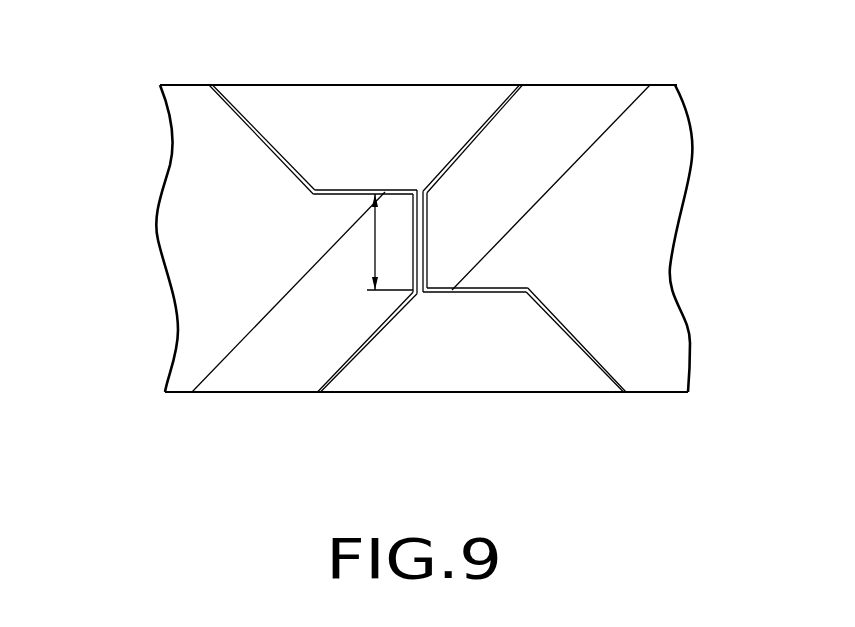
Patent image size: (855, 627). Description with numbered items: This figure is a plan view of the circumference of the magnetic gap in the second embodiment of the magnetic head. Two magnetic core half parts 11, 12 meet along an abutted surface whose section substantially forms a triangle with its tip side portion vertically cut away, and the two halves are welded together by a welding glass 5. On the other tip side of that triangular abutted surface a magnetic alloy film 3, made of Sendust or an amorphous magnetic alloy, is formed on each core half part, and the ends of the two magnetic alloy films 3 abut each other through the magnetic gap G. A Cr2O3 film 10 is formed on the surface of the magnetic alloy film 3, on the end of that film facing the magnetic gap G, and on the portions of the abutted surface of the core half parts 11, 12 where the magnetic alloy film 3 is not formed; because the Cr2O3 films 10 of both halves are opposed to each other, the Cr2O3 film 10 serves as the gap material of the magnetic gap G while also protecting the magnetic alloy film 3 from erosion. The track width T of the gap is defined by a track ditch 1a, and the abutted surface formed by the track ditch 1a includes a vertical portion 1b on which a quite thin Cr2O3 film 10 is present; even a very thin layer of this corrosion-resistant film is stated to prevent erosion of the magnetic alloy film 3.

The track ditch 1a is at (240, 110).
The vertical portion 1b is at (343, 187).
The magnetic alloy film 3 is at (607, 92).
The welding glass 5 is at (337, 102).
The Cr2O3 film 10 is at (520, 84).
The magnetic core half part 11 is at (142, 225).
The magnetic core half part 12 is at (702, 217).
The magnetic gap G is at (422, 228).
The track width T is at (379, 242).